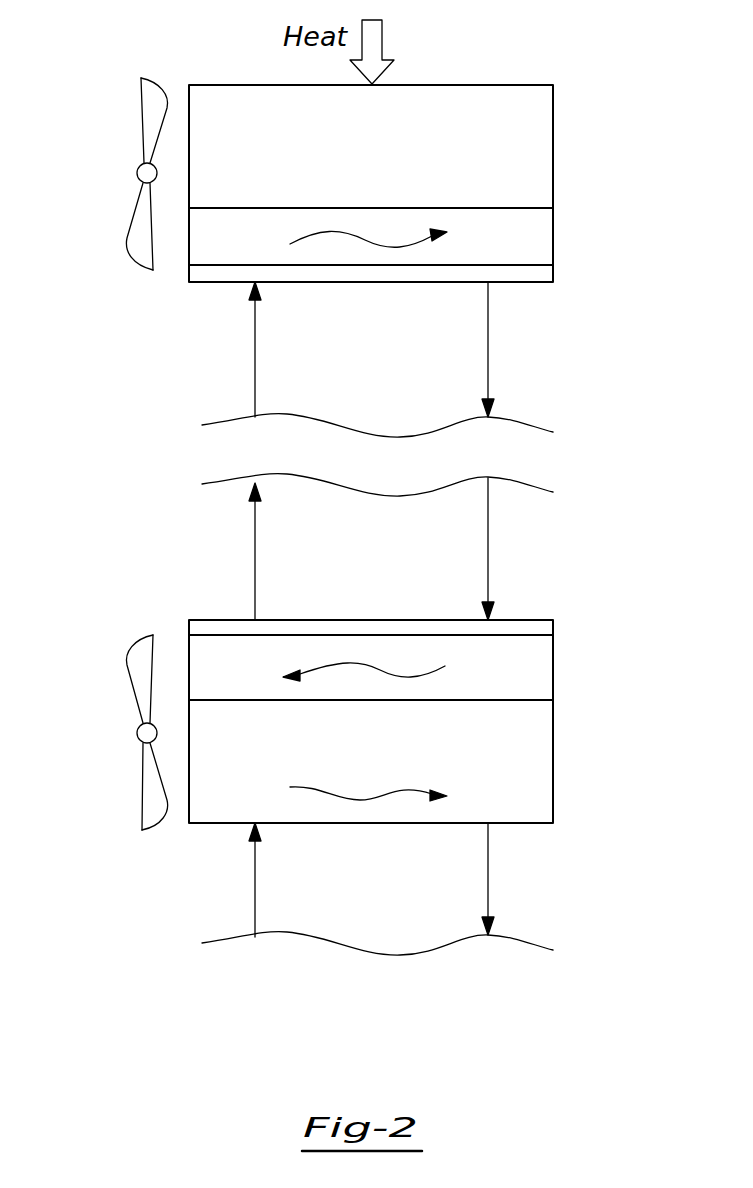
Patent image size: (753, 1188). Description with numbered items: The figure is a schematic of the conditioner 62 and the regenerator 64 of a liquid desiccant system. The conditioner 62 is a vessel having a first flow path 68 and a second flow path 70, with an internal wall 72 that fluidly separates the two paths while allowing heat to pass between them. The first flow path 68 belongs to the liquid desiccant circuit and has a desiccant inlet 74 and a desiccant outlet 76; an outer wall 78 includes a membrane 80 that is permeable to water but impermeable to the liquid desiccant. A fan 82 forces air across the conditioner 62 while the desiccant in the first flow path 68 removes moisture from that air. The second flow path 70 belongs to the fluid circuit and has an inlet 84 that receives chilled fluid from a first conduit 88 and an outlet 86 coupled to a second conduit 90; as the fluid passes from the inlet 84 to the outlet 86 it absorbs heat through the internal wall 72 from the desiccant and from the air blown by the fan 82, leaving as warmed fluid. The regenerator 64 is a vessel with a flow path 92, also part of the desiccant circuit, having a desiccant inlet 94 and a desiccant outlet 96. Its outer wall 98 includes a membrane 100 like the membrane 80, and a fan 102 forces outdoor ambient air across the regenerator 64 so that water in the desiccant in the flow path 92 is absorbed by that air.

The conditioner 62 is at (568, 767).
The regenerator 64 is at (568, 148).
The first flow path 68 is at (295, 655).
The second flow path 70 is at (395, 808).
The internal wall 72 is at (470, 700).
The desiccant inlet 74 is at (492, 619).
The desiccant outlet 76 is at (253, 619).
The outer wall 78 is at (452, 620).
The membrane 80 is at (385, 632).
The fan 82 is at (133, 687).
The inlet 84 is at (253, 824).
The outlet 86 is at (490, 823).
The first conduit 88 is at (253, 918).
The second conduit 90 is at (488, 892).
The flow path 92 is at (368, 256).
The desiccant inlet 94 is at (253, 283).
The desiccant outlet 96 is at (490, 283).
The outer wall 98 is at (460, 283).
The membrane 100 is at (307, 283).
The fan 102 is at (150, 110).